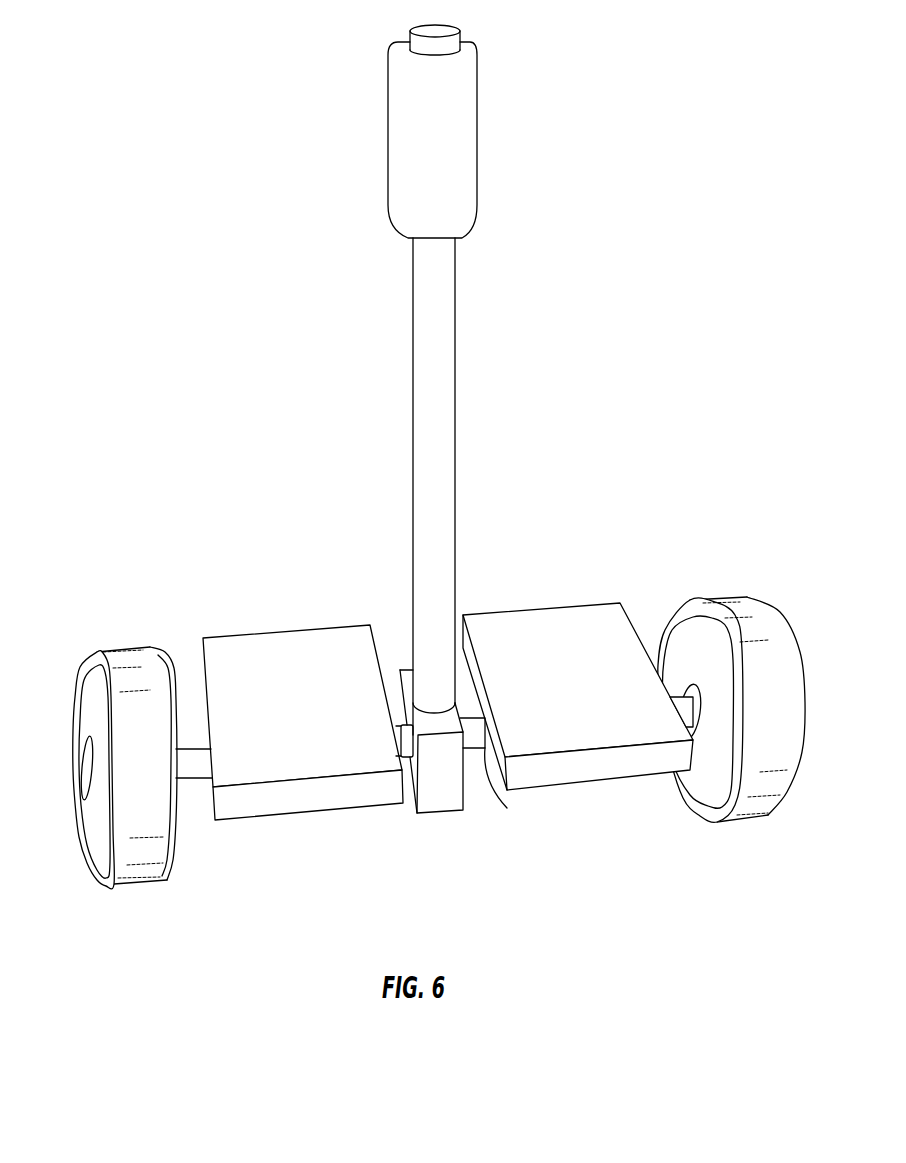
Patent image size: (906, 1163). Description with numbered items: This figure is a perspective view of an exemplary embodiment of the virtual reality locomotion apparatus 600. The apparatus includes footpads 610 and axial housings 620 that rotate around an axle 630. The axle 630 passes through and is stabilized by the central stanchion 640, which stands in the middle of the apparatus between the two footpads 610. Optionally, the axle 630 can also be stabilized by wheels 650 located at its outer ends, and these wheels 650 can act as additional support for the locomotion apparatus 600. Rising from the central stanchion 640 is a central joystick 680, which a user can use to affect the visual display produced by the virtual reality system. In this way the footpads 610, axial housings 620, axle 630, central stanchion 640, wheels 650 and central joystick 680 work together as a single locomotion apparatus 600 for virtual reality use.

The virtual reality locomotion apparatus 600 is at (427, 457).
The footpads 610 is at (278, 643).
The axial housings 620 is at (500, 790).
The axle 630 is at (187, 768).
The central stanchion 640 is at (437, 813).
The wheels 650 is at (115, 660).
The central joystick 680 is at (443, 308).